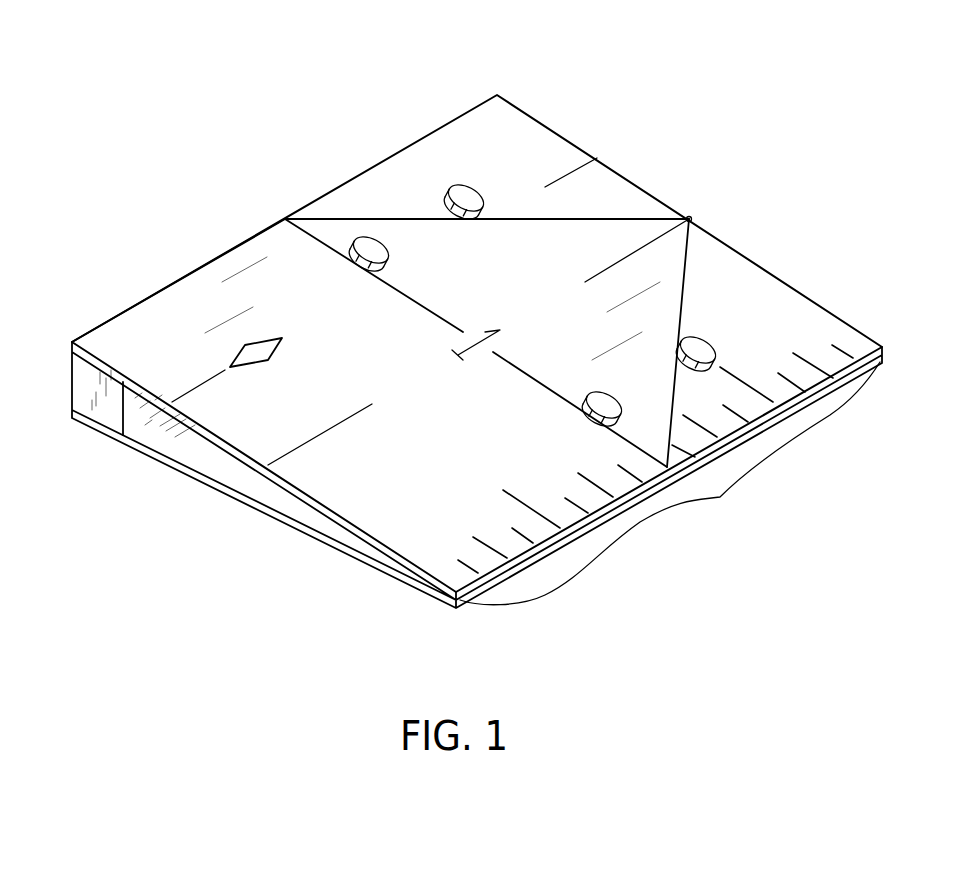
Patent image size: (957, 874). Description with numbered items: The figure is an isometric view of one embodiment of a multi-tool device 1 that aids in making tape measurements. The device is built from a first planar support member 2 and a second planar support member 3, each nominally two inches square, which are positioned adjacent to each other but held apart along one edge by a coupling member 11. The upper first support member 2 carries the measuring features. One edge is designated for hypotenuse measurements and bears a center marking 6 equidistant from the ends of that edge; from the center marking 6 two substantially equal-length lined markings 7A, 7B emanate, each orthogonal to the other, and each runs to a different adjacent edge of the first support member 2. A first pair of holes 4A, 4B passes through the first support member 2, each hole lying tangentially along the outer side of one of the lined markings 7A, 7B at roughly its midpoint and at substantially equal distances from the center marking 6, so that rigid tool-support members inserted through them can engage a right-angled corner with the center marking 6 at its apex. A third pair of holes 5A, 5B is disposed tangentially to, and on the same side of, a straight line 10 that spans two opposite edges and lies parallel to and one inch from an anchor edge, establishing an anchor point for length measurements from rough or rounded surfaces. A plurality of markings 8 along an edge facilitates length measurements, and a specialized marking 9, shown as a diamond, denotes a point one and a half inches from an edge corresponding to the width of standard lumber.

The multi-tool device 1 is at (311, 88).
The first planar support member 2 is at (421, 499).
The second planar support member 3 is at (330, 548).
The first pair of holes 4A is at (477, 192).
The first pair of holes 4B is at (717, 345).
The third pair of holes 5A is at (389, 247).
The third pair of holes 5B is at (622, 403).
The center marking 6 is at (692, 215).
The lined marking 7A is at (557, 221).
The lined marking 7B is at (688, 274).
The markings 8 is at (713, 505).
The specialized marking 9 is at (283, 345).
The straight line 10 is at (333, 255).
The coupling member 11 is at (103, 415).